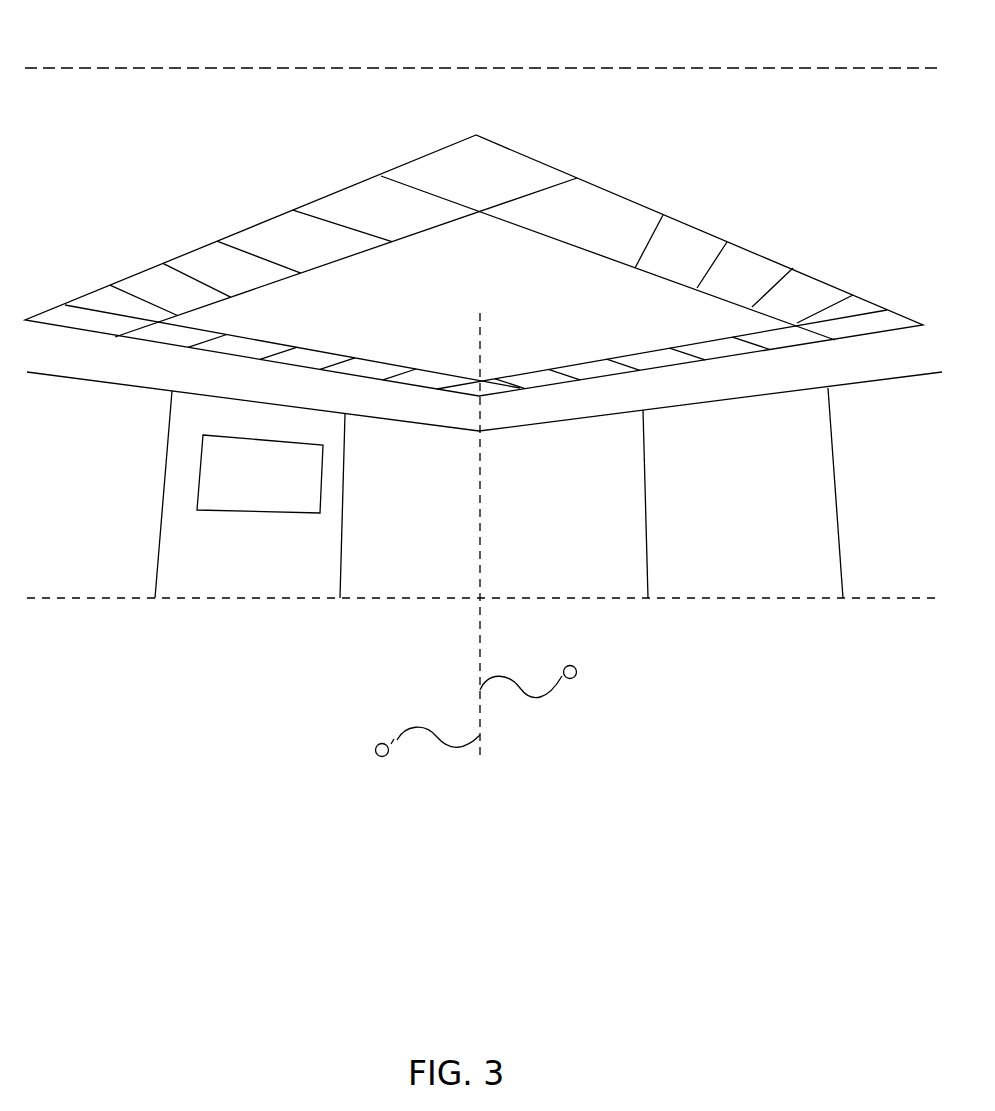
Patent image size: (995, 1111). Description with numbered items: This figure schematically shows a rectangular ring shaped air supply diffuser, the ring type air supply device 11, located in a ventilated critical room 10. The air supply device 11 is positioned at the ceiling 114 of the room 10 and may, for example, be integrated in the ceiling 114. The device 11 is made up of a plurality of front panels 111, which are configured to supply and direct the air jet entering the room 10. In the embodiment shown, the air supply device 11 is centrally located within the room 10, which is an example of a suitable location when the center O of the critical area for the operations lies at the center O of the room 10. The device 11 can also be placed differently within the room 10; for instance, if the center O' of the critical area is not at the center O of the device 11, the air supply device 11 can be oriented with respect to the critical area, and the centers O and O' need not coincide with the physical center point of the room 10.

The room 10 is at (375, 663).
The air supply device 11 is at (474, 254).
The front panels 111 is at (737, 268).
The ceiling 114 is at (187, 90).